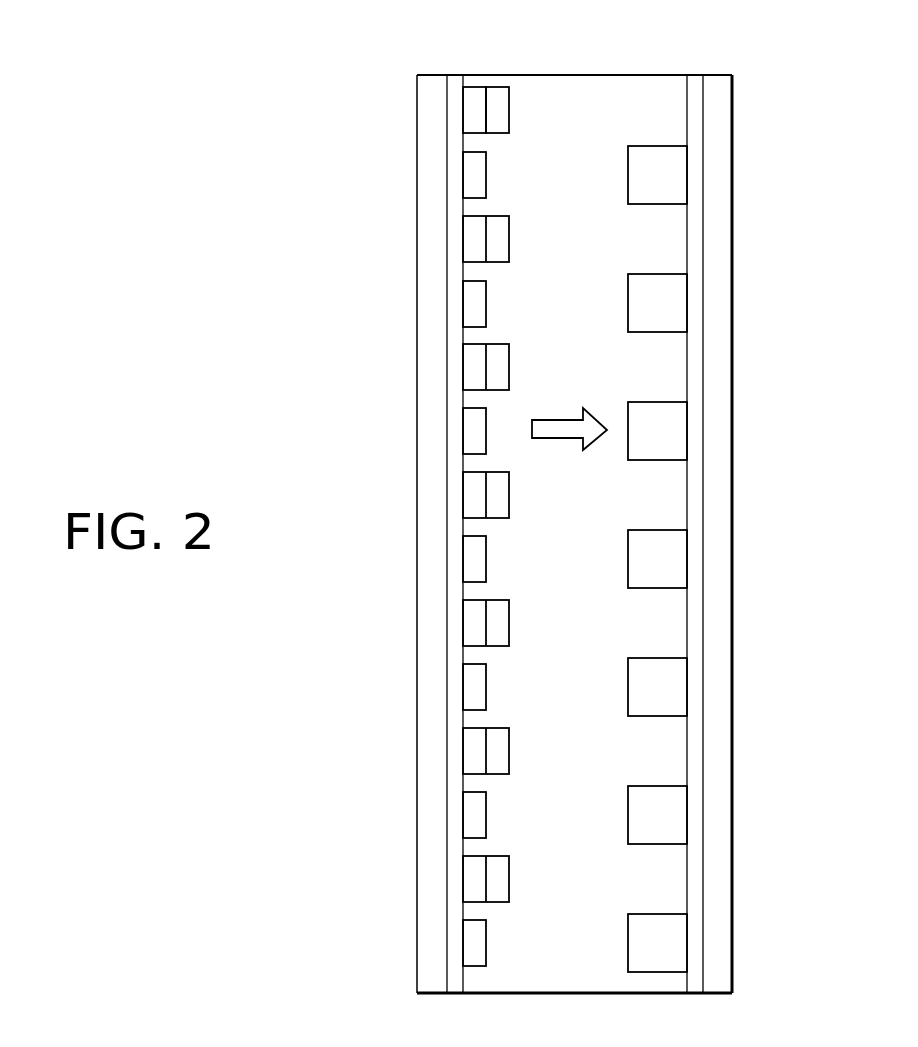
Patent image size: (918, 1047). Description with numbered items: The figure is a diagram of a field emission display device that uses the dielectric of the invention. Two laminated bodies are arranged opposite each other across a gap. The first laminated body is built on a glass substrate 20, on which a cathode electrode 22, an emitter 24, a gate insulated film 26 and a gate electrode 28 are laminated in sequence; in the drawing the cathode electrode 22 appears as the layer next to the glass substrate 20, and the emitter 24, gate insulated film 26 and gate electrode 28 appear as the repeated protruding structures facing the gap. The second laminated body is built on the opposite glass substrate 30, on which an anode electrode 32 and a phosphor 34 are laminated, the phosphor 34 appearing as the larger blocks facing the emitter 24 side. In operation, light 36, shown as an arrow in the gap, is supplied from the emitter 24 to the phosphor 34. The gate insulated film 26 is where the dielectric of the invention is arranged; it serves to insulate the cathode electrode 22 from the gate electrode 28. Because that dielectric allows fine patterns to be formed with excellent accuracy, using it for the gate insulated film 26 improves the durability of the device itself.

The glass substrate 20 is at (402, 534).
The cathode electrode 22 is at (410, 534).
The emitter 24 is at (421, 175).
The gate insulated film 26 is at (451, 81).
The gate electrode 28 is at (519, 81).
The glass substrate 30 is at (726, 422).
The anode electrode 32 is at (741, 534).
The phosphor 34 is at (708, 172).
The light 36 is at (572, 408).